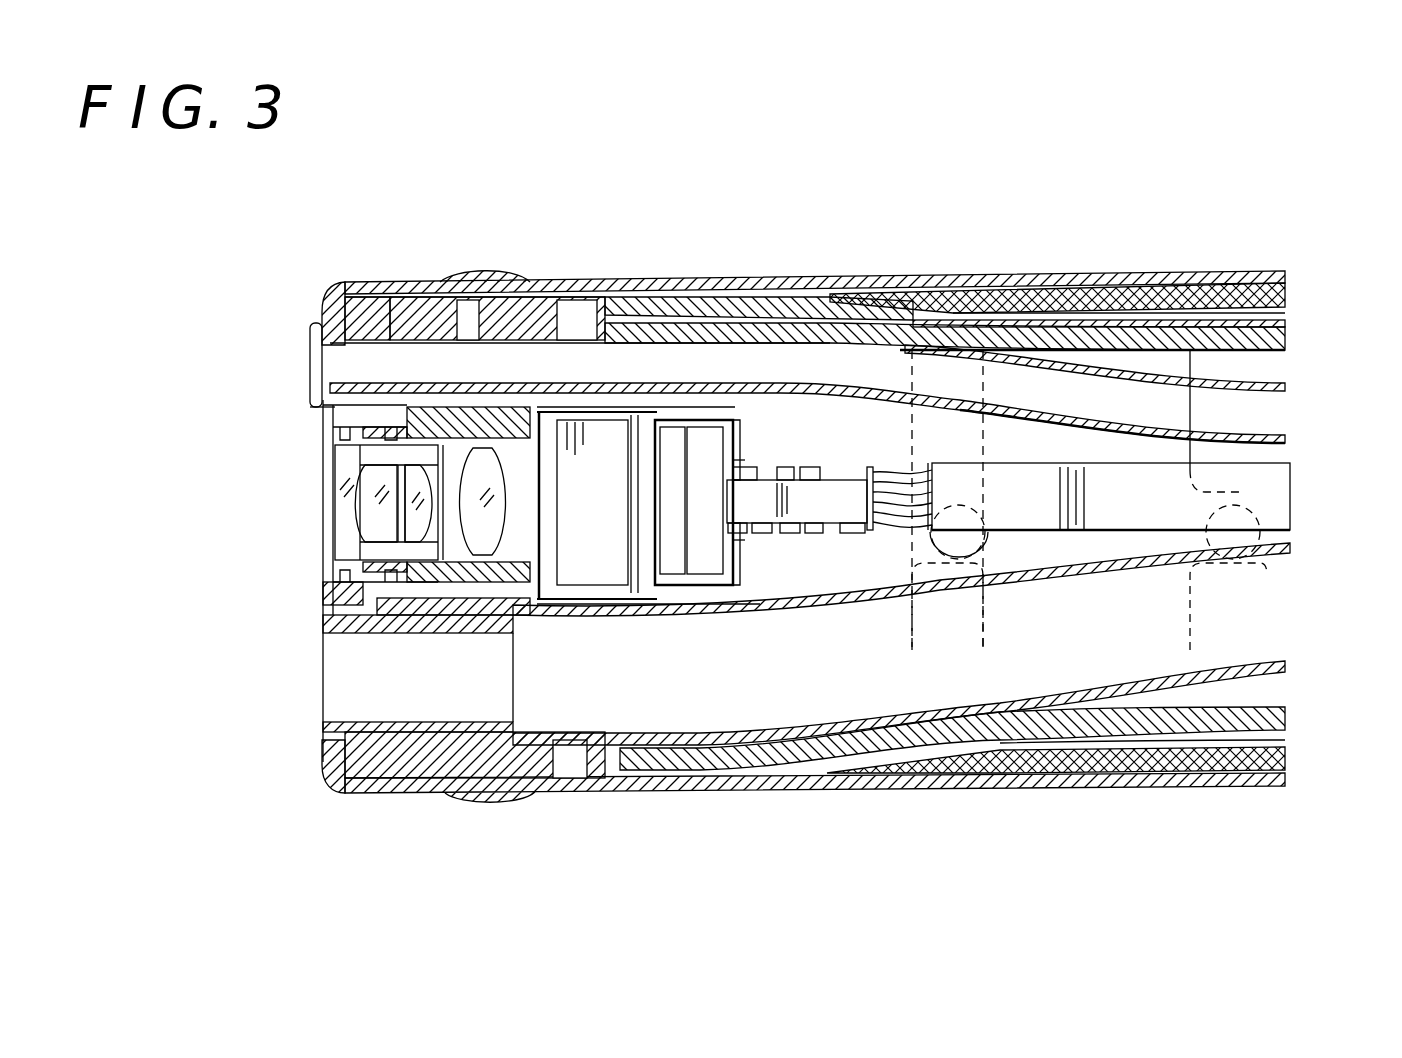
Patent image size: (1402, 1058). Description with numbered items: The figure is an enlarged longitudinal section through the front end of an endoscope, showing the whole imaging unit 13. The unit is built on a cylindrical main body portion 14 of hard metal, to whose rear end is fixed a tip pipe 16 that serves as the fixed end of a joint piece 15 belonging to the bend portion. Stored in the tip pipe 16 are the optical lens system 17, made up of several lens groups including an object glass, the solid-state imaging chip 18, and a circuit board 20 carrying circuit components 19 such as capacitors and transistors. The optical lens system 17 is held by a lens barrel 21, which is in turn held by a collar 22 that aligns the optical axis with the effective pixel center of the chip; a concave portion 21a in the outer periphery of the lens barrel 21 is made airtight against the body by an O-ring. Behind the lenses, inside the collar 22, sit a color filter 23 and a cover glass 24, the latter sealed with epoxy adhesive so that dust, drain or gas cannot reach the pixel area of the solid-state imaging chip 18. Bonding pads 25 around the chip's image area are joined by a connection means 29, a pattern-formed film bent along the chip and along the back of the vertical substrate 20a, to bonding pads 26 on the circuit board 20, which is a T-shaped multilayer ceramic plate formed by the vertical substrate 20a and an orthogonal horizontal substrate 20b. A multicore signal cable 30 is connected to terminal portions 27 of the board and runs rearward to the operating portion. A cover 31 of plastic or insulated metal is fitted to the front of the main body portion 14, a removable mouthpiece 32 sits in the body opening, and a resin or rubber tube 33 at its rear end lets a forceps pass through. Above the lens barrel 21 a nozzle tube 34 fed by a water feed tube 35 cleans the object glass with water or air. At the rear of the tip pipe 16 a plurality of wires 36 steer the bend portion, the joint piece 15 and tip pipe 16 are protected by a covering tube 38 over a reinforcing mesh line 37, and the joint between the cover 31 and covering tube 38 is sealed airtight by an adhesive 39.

The imaging unit 13 is at (823, 250).
The main body portion 14 is at (415, 300).
The joint piece 15 is at (1095, 745).
The tip pipe 16 is at (610, 768).
The optical lens system 17 is at (370, 532).
The solid-state imaging chip 18 is at (703, 457).
The circuit components 19 is at (814, 465).
The circuit board 20 is at (705, 557).
The vertical substrate 20a is at (715, 410).
The horizontal substrate 20b is at (838, 500).
The lens barrel 21 is at (335, 445).
The concave portion 21a is at (340, 607).
The collar 22 is at (505, 400).
The color filter 23 is at (590, 453).
The cover glass 24 is at (673, 437).
The bonding pads 25 is at (660, 563).
The bonding pads 26 is at (737, 462).
The terminal portions 27 is at (848, 535).
The connection means 29 is at (723, 437).
The signal cable 30 is at (885, 470).
The cover 31 is at (343, 270).
The mouthpiece 32 is at (335, 735).
The tube 33 is at (1250, 670).
The nozzle tube 34 is at (388, 292).
The water feed tube 35 is at (1275, 381).
The wires 36 is at (1170, 300).
The mesh line 37 is at (1118, 325).
The covering tube 38 is at (1075, 285).
The adhesive 39 is at (495, 268).